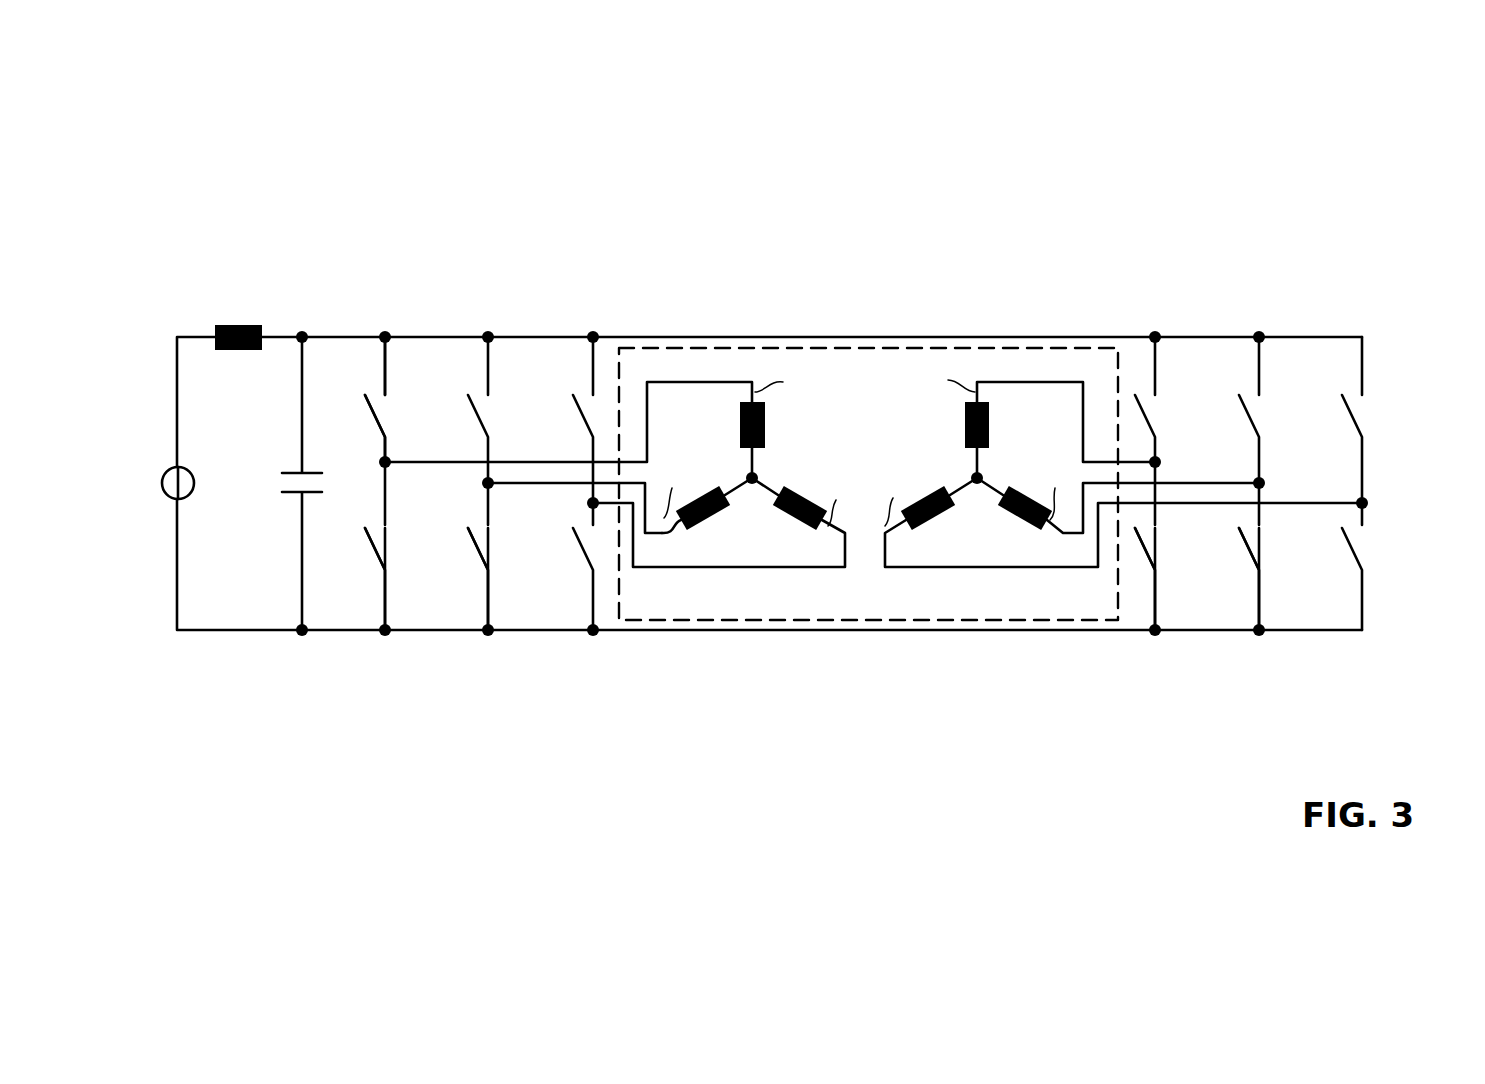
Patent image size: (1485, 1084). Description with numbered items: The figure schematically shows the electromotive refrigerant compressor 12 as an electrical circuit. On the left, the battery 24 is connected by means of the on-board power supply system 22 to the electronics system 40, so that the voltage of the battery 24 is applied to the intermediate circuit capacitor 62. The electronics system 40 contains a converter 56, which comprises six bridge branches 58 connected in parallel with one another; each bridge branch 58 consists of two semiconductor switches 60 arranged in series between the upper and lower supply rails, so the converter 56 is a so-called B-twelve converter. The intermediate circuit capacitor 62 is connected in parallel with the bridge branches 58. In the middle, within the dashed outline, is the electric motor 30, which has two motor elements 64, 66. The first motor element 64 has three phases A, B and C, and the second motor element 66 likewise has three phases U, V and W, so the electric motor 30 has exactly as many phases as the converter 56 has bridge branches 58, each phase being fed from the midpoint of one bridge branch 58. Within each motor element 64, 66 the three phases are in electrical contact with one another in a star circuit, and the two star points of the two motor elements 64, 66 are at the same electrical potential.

The electromotive refrigerant compressor 12 is at (1405, 275).
The on-board power supply system 22 is at (243, 328).
The battery 24 is at (162, 485).
The electric motor 30 is at (880, 326).
The electronics system 40 is at (360, 683).
The converter 56 is at (430, 337).
The bridge branch 58 is at (386, 603).
The semiconductor switch 60 is at (1355, 412).
The intermediate circuit capacitor 62 is at (292, 497).
The first motor element 64 is at (758, 490).
The second motor element 66 is at (985, 490).